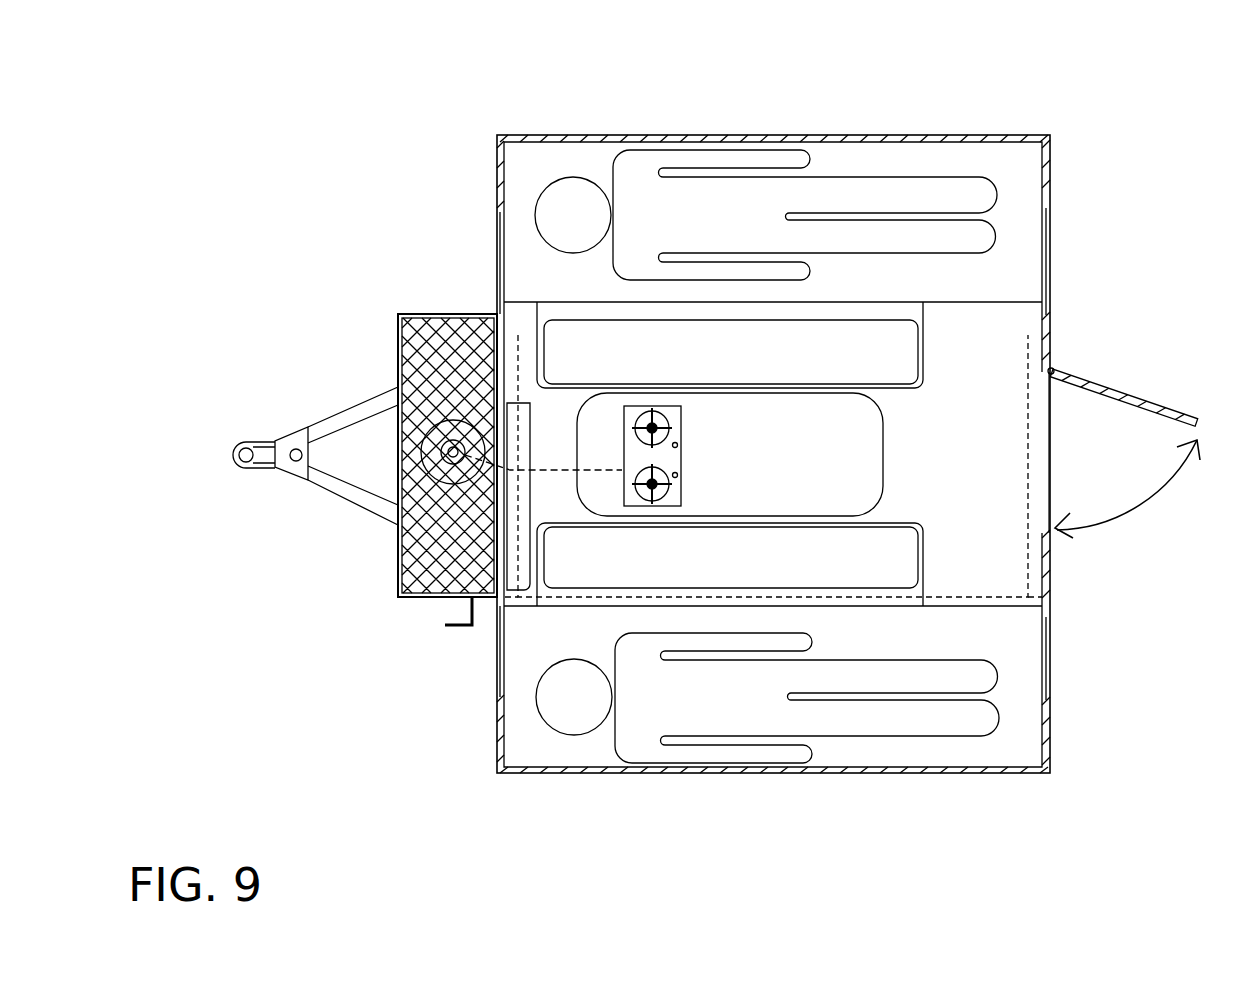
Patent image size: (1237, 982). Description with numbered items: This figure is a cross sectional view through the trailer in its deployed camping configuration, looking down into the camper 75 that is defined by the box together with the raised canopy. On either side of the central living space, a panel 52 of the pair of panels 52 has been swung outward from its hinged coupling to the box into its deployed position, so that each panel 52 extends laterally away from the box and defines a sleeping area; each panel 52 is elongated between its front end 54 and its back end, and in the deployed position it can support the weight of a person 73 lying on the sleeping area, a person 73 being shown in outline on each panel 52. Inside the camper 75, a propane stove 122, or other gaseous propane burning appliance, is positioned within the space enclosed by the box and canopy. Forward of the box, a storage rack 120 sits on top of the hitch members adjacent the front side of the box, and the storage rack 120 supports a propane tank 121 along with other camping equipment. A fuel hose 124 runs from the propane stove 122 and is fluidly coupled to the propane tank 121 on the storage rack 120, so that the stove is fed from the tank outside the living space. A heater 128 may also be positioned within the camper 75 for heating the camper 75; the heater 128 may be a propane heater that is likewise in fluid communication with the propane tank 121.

The panel 52 is at (1052, 134).
The front end 54 is at (517, 178).
The person 73 is at (728, 183).
The camper 75 is at (1000, 340).
The storage rack 120 is at (408, 314).
The propane tank 121 is at (456, 438).
The propane stove 122 is at (676, 498).
The fuel hose 124 is at (548, 471).
The heater 128 is at (522, 472).